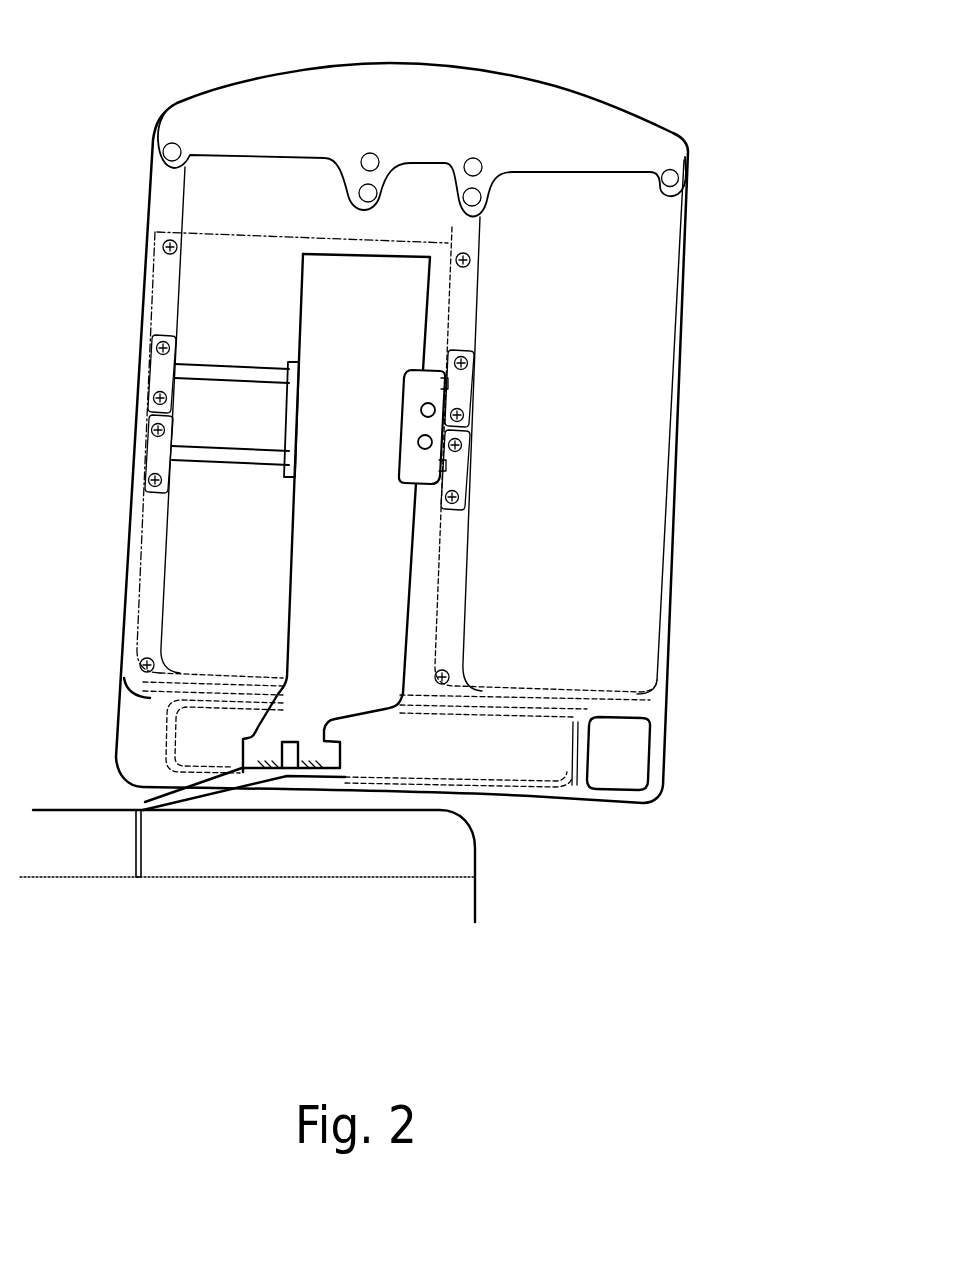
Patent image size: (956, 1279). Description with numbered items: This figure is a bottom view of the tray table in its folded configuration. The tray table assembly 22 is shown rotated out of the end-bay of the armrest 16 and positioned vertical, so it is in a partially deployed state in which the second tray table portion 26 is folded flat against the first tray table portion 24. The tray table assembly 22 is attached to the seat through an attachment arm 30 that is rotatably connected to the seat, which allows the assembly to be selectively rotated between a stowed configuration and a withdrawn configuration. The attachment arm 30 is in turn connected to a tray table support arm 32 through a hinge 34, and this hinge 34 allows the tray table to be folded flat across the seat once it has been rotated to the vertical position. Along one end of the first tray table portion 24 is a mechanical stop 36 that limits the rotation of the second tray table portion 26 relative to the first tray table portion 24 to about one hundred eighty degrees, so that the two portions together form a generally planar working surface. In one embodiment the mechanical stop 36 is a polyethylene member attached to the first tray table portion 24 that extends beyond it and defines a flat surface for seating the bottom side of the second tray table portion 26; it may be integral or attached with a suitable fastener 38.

The armrest 16 is at (87, 853).
The tray table assembly 22 is at (703, 115).
The first tray table portion 24 is at (548, 290).
The second tray table portion 26 is at (135, 725).
The attachment arm 30 is at (213, 787).
The tray table support arm 32 is at (363, 672).
The hinge 34 is at (288, 757).
The mechanical stop 36 is at (487, 100).
The fastener 38 is at (170, 140).